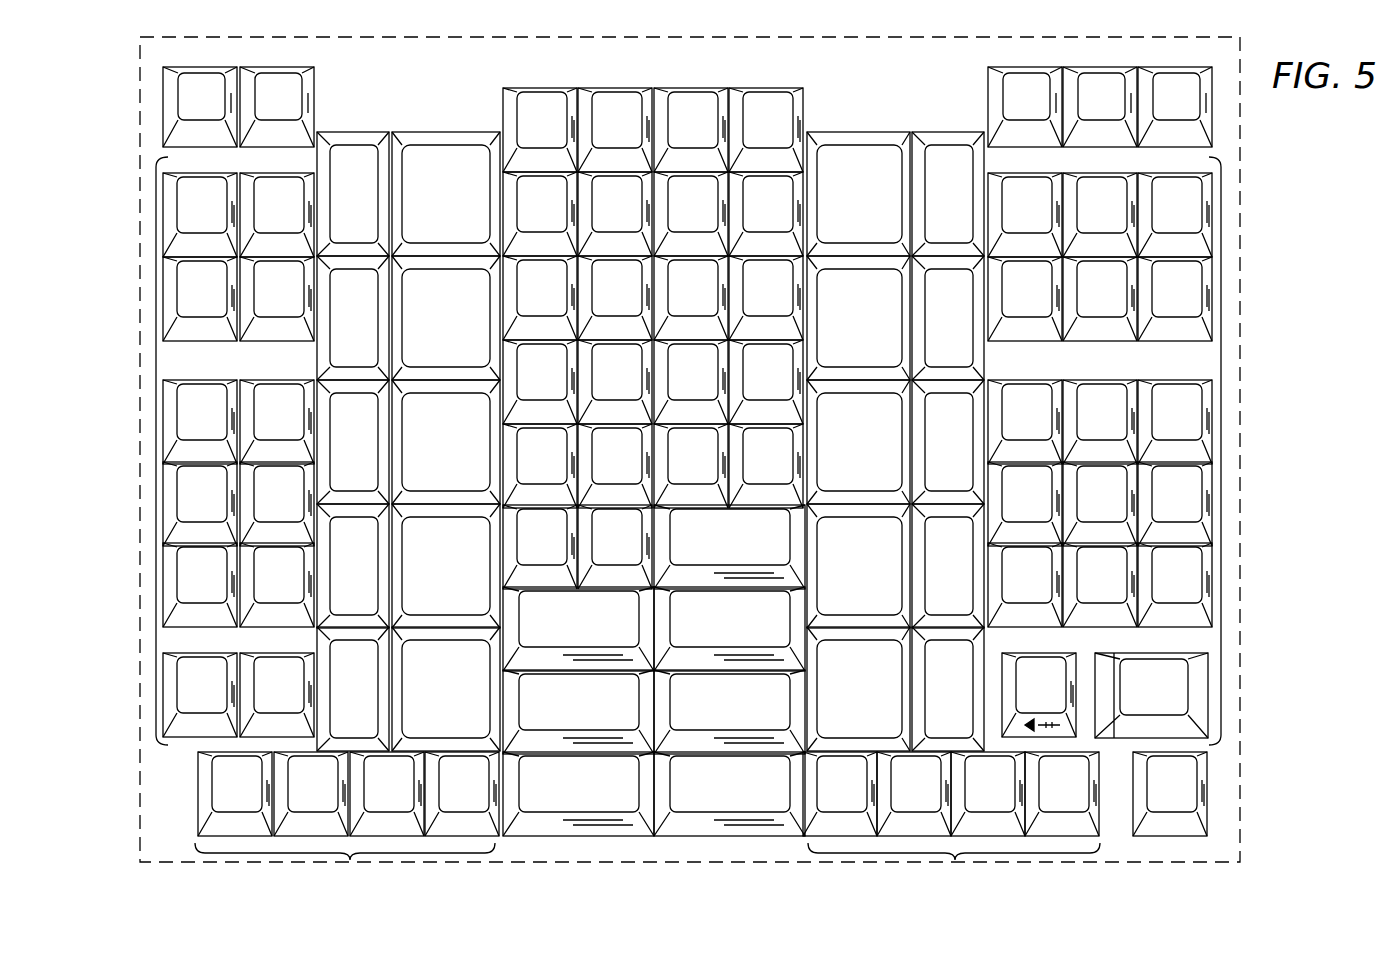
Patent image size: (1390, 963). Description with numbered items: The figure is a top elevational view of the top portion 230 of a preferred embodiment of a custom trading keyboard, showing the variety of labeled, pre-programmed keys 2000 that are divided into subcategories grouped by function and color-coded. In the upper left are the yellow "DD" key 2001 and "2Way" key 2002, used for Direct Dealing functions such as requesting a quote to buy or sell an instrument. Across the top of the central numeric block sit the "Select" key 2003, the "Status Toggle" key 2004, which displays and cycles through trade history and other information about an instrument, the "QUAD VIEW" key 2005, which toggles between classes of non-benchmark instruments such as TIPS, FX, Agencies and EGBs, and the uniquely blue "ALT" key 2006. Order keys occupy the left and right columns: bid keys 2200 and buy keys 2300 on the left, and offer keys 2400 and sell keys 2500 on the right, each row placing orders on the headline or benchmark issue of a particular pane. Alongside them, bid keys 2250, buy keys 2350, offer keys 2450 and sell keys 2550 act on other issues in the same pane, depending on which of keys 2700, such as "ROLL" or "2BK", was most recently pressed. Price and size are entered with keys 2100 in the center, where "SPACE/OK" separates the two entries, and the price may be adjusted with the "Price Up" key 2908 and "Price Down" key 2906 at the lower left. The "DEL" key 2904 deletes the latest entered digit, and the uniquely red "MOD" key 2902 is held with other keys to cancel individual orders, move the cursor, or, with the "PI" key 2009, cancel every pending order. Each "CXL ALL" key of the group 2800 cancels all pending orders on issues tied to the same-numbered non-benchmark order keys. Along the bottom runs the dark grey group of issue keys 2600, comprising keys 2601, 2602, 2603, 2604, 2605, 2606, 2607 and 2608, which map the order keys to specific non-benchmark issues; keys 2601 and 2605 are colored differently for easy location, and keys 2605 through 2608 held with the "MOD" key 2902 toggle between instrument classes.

The top portion 230 is at (690, 438).
The keys 2000 is at (576, 26).
The DD key 2001 is at (213, 67).
The 2Way key 2002 is at (278, 67).
The Select key 2003 is at (536, 88).
The Status Toggle key 2004 is at (612, 88).
The QUAD VIEW key 2005 is at (686, 88).
The ALT key 2006 is at (772, 88).
The keys (ROLL, 2BK and related issue-selection keys) 2700 is at (1180, 67).
The buy keys 2300 is at (372, 166).
The keys (numeric and SPACE/OK keys) 2100 is at (484, 350).
The bid keys 2200 is at (232, 356).
The buy keys (WI/OLD BUY keys) 2350 is at (313, 356).
The bid keys 2250 is at (155, 354).
The sell keys 2500 is at (793, 162).
The sell keys (WI/OLD SELL keys) 2550 is at (988, 352).
The offer keys 2400 is at (1066, 352).
The offer keys 2450 is at (1134, 352).
The CXL ALL keys 2800 is at (1221, 356).
The Price Down key 2906 is at (262, 650).
The Price Up key 2908 is at (163, 696).
The DEL key 2904 is at (1046, 653).
The MOD key 2902 is at (1150, 653).
The PI key 2009 is at (1207, 790).
The issue keys 2600 is at (647, 869).
The ISSUE 6-1 key 2601 is at (228, 838).
The ISSUE 6-2 key 2602 is at (308, 838).
The ISSUE 6-3 key 2603 is at (386, 830).
The ISSUE 6-4 key 2604 is at (488, 838).
The ISSUE 6-5 key 2605 is at (813, 838).
The ISSUE 6-6 key 2606 is at (900, 838).
The ISSUE 6-7 key 2607 is at (988, 838).
The ISSUE 6-8 key 2608 is at (1073, 838).